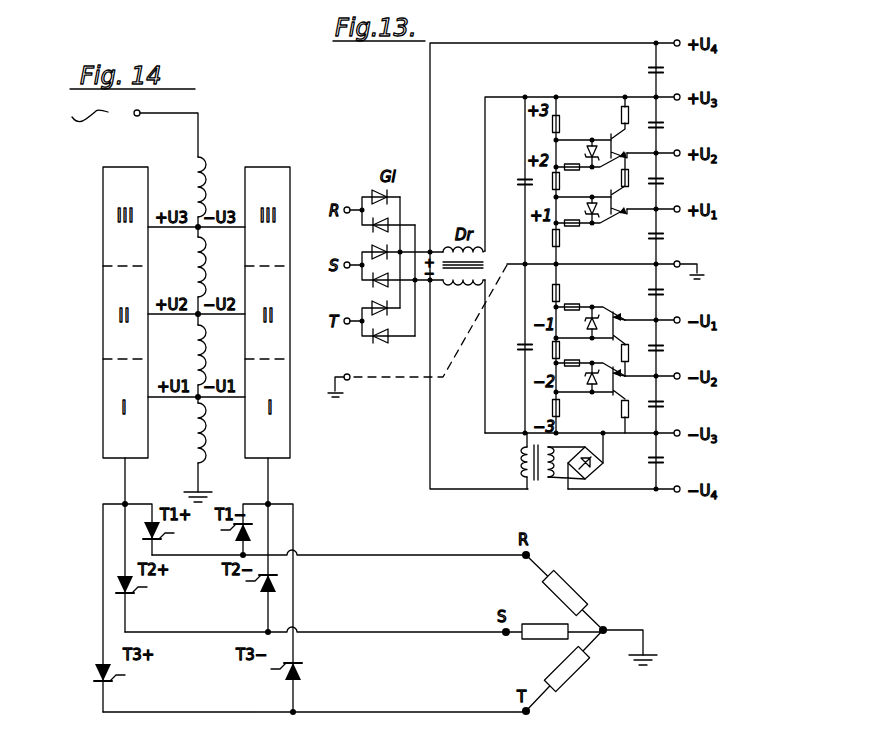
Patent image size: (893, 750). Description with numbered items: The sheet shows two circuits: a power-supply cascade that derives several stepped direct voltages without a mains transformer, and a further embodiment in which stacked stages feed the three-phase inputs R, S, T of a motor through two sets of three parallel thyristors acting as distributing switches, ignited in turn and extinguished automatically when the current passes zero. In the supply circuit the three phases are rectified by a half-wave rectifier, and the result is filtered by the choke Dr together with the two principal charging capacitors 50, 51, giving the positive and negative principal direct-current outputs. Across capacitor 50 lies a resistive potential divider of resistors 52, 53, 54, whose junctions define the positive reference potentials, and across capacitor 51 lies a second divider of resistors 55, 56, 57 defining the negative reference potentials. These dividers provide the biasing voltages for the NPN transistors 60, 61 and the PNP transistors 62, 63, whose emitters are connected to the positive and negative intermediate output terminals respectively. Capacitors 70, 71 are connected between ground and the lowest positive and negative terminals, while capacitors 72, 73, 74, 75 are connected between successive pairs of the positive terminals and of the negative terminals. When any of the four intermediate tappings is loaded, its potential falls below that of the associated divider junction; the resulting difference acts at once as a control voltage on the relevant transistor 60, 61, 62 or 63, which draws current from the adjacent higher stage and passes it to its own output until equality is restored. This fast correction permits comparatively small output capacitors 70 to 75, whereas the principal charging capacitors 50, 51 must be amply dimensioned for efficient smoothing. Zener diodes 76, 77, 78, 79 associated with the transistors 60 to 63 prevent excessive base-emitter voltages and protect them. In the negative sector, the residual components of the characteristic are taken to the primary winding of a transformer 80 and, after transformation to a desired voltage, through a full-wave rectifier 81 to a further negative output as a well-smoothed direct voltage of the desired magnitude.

The principal charging capacitor 50 is at (518, 180).
The principal charging capacitor 51 is at (518, 345).
The resistor 52 is at (560, 127).
The resistor 53 is at (553, 184).
The resistor 54 is at (560, 238).
The resistor 55 is at (560, 297).
The resistor 56 is at (553, 352).
The resistor 57 is at (553, 410).
The NPN transistor 60 is at (613, 142).
The NPN transistor 61 is at (615, 198).
The PNP transistor 62 is at (614, 339).
The PNP transistor 63 is at (620, 388).
The capacitor 70 is at (665, 238).
The capacitor 71 is at (665, 293).
The capacitor 72 is at (665, 174).
The capacitor 73 is at (651, 121).
The capacitor 74 is at (665, 348).
The capacitor 75 is at (665, 404).
The Zener diode 76 is at (594, 165).
The Zener diode 77 is at (600, 222).
The Zener diode 78 is at (606, 314).
The Zener diode 79 is at (594, 391).
The transformer 80 is at (523, 474).
The full-wave rectifier 81 is at (596, 468).